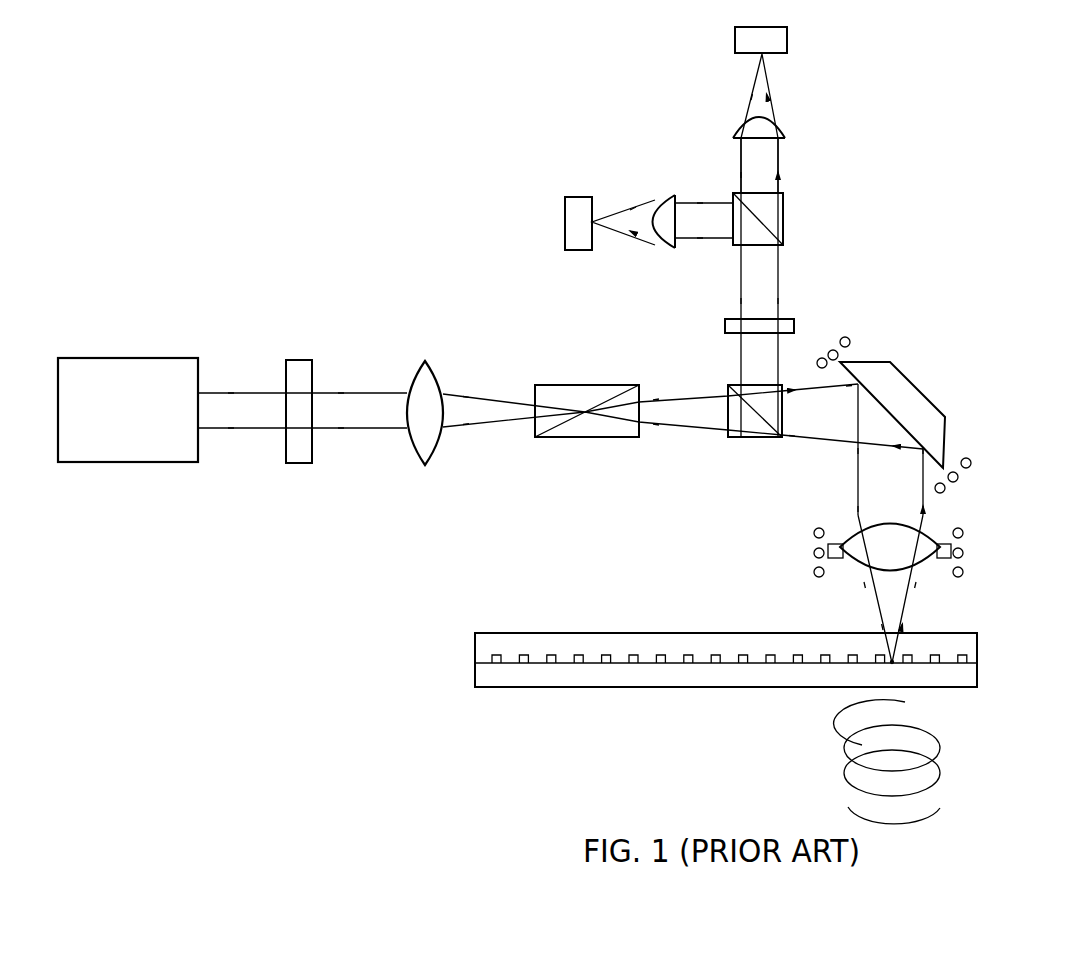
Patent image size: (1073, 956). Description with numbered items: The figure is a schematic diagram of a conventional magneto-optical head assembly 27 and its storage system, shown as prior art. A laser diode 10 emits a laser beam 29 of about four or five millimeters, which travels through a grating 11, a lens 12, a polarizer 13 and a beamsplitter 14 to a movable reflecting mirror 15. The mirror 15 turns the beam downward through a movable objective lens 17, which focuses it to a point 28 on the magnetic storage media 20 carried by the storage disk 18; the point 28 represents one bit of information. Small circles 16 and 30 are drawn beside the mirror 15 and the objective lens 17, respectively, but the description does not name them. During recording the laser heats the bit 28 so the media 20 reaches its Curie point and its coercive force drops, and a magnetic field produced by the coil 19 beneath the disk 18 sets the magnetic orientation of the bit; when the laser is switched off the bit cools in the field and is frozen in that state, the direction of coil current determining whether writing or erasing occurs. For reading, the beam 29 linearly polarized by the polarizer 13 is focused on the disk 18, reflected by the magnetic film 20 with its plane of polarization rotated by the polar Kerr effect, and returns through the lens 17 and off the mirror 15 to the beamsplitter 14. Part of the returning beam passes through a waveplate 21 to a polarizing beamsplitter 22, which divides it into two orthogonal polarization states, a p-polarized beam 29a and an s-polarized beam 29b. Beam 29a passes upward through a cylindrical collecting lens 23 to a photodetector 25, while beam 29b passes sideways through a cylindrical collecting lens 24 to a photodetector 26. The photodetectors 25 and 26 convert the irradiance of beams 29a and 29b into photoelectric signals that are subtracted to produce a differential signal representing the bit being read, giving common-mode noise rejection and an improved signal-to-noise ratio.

The laser diode 10 is at (160, 463).
The grating 11 is at (297, 465).
The lens 12 is at (425, 465).
The polarizer 13 is at (585, 437).
The beamsplitter 14 is at (750, 440).
The movable reflecting mirror 15 is at (932, 400).
The tracking coil 16 is at (968, 460).
The movable objective lens 17 is at (928, 572).
The storage disk 18 is at (978, 640).
The coil 19 is at (943, 778).
The storage media 20 is at (648, 655).
The waveplate 21 is at (722, 324).
The polarizing beamsplitter 22 is at (787, 219).
The cylindrical collecting lens 23 is at (783, 130).
The cylindrical collecting lens 24 is at (669, 196).
The photodetector 25 is at (790, 42).
The photodetector 26 is at (577, 195).
The magneto-optical head assembly 27 is at (961, 316).
The point 28 is at (890, 660).
The laser beam 29 is at (856, 488).
The p-polarized beam 29a is at (783, 180).
The s-polarized beam 29b is at (704, 245).
The focusing coil 30 is at (963, 570).